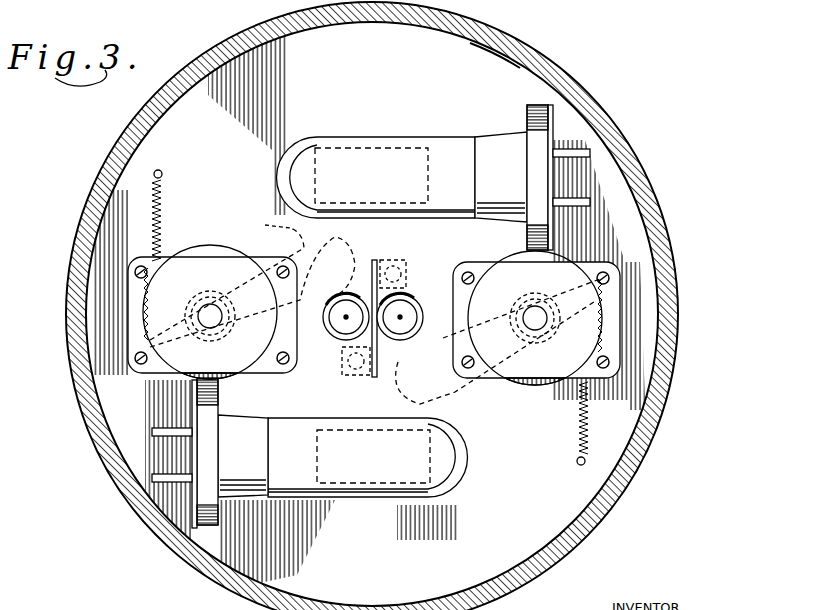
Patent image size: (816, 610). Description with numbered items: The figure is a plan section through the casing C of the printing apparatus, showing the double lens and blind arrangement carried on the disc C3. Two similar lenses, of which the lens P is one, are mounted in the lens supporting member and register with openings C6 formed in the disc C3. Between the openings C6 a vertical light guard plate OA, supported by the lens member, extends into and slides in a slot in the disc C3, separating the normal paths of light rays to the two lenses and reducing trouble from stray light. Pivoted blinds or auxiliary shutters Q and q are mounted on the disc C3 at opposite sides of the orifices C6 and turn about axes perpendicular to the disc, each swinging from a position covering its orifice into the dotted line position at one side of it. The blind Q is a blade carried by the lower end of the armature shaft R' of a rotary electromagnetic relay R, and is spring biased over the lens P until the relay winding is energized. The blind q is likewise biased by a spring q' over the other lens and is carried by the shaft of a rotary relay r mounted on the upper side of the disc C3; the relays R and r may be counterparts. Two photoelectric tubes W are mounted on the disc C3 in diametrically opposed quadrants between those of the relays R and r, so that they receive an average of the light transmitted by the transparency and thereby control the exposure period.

The casing C is at (632, 164).
The disc C3 is at (493, 73).
The photoelectric tubes W is at (370, 187).
The rotary relay r is at (210, 324).
The rotary electromagnetic relay R is at (536, 307).
The armature shaft R' is at (524, 308).
The blind Q is at (456, 393).
The blind q is at (267, 225).
The spring q' is at (182, 215).
The light guard plate OA is at (380, 263).
The openings C6 is at (343, 293).
The lens P is at (345, 322).